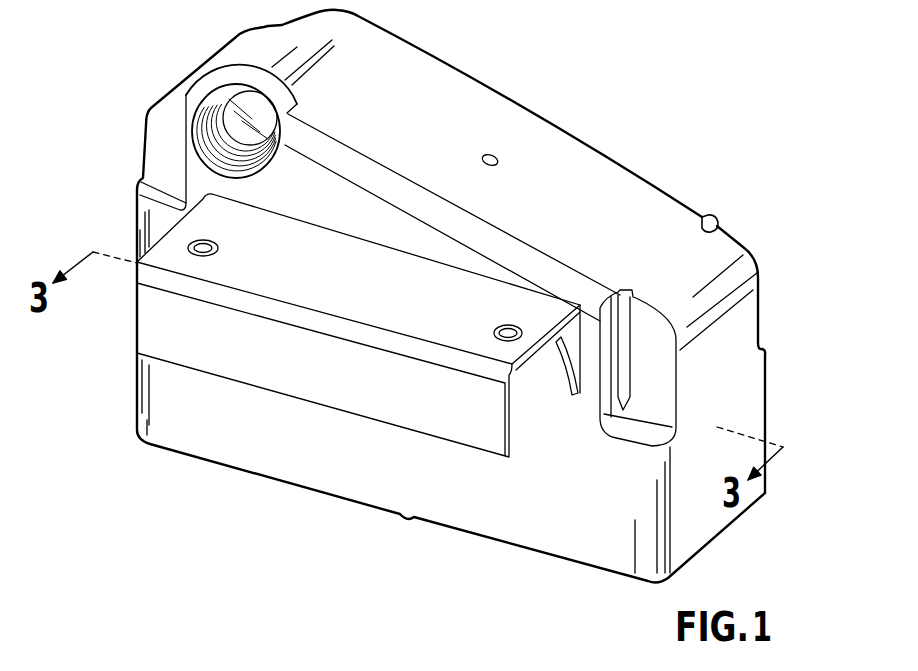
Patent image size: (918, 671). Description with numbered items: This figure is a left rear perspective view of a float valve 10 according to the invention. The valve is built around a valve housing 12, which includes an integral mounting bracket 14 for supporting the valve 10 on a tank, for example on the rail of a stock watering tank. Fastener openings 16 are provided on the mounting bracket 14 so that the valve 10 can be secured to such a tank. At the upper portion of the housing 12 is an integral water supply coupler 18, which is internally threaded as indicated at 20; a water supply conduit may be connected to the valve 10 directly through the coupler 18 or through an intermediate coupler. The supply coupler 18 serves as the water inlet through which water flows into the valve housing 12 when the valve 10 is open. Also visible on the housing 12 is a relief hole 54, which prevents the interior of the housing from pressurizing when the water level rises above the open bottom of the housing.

The float valve 10 is at (422, 296).
The valve housing 12 is at (531, 113).
The mounting bracket 14 is at (555, 352).
The fastener openings 16 is at (492, 329).
The water supply coupler 18 is at (224, 78).
The internal threads 20 is at (203, 137).
The relief hole 54 is at (497, 163).